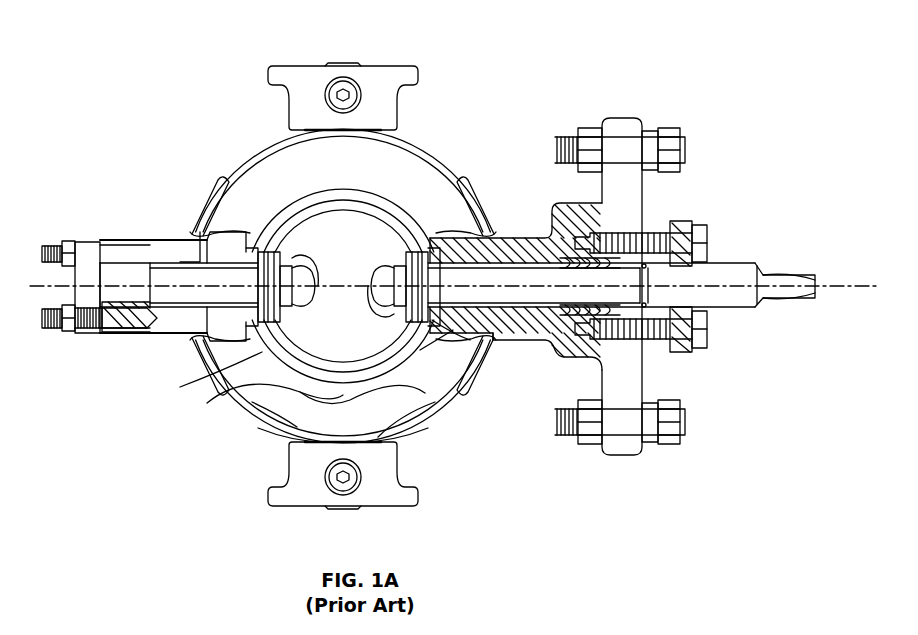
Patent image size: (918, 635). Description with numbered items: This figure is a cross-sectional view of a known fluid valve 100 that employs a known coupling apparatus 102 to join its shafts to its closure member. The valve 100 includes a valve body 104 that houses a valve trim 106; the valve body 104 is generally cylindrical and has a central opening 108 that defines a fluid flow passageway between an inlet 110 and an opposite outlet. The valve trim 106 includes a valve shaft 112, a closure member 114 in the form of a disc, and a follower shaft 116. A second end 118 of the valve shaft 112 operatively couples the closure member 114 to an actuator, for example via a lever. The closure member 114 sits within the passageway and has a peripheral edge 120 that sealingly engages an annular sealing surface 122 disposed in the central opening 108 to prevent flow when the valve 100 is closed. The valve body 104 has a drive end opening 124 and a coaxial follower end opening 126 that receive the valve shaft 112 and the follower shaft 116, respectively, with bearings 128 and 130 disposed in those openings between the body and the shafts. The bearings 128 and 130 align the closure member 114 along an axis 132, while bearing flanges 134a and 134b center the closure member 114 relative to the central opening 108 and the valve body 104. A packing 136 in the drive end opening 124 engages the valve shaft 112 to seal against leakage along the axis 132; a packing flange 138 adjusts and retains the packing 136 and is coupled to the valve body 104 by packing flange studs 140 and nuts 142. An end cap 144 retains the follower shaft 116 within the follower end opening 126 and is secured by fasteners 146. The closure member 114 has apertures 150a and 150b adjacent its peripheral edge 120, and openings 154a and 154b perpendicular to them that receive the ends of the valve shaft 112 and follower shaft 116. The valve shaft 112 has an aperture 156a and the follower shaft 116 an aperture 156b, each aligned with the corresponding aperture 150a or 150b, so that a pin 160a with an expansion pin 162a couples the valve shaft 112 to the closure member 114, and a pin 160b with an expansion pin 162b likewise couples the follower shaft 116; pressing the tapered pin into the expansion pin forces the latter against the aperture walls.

The fluid valve 100 is at (127, 33).
The coupling apparatus 102 is at (445, 392).
The valve body 104 is at (433, 147).
The valve trim 106 is at (467, 208).
The central opening 108 is at (207, 403).
The inlet 110 is at (297, 427).
The valve shaft 112 is at (720, 266).
The closure member 114 is at (258, 428).
The follower shaft 116 is at (150, 280).
The second end 118 is at (770, 300).
The peripheral edge 120 is at (425, 393).
The annular sealing surface 122 is at (378, 437).
The drive end opening 124 is at (538, 255).
The follower end opening 126 is at (172, 315).
The bearing 128 is at (488, 235).
The bearing 130 is at (165, 272).
The axis 132 is at (818, 283).
The bearing flange 134a is at (440, 330).
The bearing flange 134b is at (203, 380).
The packing 136 is at (572, 345).
The packing flange 138 is at (680, 222).
The packing flange studs 140 is at (650, 232).
The nuts 142 is at (697, 226).
The end cap 144 is at (87, 335).
The fasteners 146 is at (62, 243).
The aperture 150a is at (398, 312).
The aperture 150b is at (318, 300).
The opening 154a is at (392, 250).
The opening 154b is at (300, 250).
The aperture 156a is at (480, 378).
The aperture 156b is at (194, 262).
The pin 160a is at (416, 240).
The pin 160b is at (270, 232).
The expansion pin 162a is at (432, 228).
The expansion pin 162b is at (257, 258).